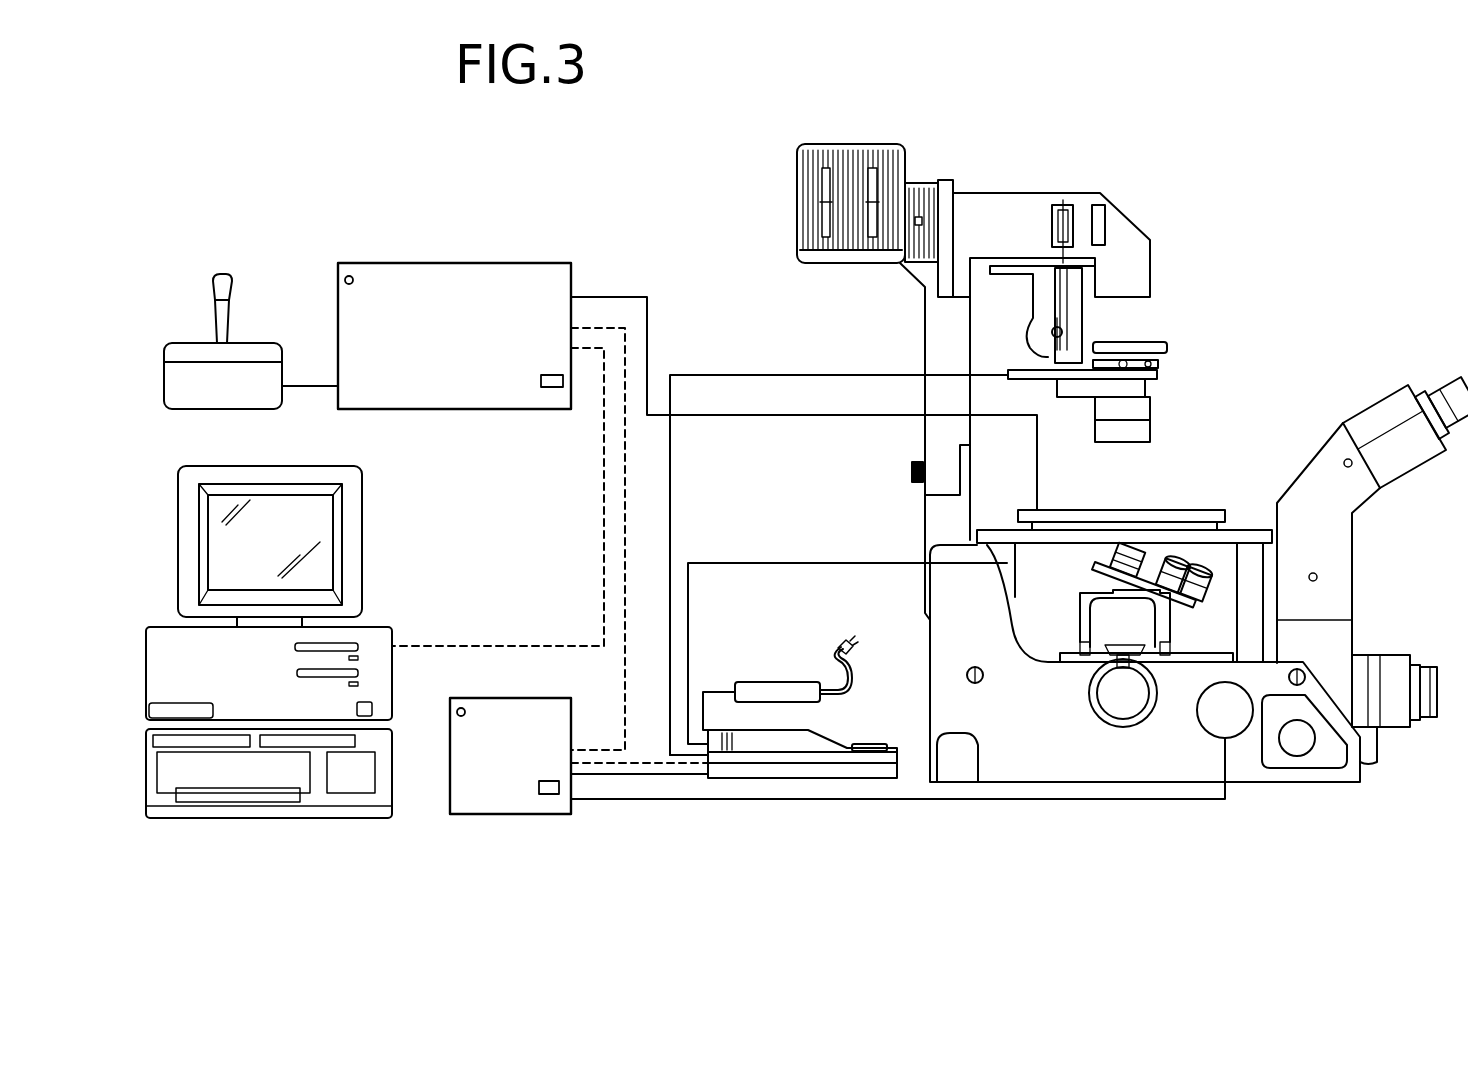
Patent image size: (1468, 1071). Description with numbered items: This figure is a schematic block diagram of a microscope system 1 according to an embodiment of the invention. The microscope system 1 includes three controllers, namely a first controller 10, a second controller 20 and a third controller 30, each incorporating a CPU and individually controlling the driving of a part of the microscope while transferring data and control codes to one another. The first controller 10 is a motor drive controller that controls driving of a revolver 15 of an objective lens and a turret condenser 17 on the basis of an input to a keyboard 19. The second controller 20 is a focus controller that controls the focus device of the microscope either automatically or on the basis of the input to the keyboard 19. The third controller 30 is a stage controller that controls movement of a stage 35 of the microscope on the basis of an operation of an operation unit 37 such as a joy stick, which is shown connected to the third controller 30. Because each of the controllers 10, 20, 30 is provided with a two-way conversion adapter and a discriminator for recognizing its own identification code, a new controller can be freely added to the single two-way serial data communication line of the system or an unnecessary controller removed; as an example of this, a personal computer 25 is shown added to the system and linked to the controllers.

The microscope system 1 is at (1132, 463).
The first controller 10 is at (805, 745).
The revolver 15 is at (1153, 563).
The turret condenser 17 is at (1140, 412).
The keyboard 19 is at (853, 744).
The second controller 20 is at (454, 792).
The personal computer 25 is at (273, 808).
The third controller 30 is at (475, 278).
The stage 35 is at (1057, 510).
The operation unit 37 is at (258, 348).